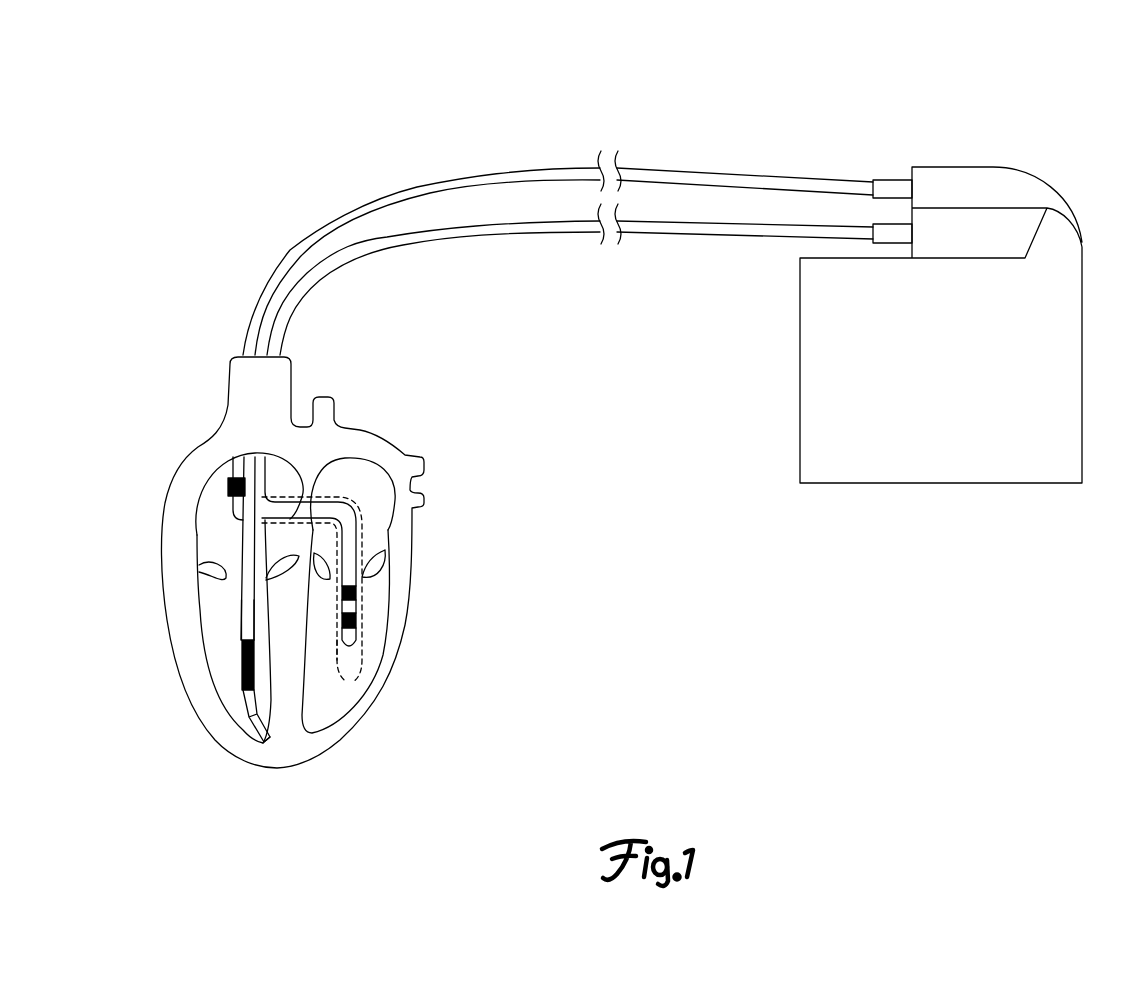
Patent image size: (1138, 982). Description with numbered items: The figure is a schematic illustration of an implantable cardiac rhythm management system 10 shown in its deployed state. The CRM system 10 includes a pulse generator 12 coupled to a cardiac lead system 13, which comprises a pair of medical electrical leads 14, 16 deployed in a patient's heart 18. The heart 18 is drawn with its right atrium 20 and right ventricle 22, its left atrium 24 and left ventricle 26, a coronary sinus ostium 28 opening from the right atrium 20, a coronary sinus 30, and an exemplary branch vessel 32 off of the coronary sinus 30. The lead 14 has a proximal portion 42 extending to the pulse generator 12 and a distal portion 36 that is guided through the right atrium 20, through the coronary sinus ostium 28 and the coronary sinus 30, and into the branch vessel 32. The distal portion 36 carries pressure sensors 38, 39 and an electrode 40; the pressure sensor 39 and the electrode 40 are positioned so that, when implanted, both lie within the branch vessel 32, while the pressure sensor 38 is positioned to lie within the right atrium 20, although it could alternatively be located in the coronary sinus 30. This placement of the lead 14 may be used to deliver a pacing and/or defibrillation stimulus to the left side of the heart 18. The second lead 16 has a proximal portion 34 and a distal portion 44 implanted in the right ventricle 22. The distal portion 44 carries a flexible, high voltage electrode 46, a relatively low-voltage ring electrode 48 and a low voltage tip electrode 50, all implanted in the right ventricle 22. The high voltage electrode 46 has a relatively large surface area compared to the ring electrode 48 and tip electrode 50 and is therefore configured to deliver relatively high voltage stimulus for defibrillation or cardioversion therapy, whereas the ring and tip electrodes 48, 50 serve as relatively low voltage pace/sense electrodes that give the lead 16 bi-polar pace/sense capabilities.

The cardiac rhythm management system 10 is at (857, 100).
The pulse generator 12 is at (1087, 348).
The cardiac lead system 13 is at (458, 152).
The medical electrical lead 14 is at (702, 167).
The medical electrical lead 16 is at (722, 240).
The heart 18 is at (416, 590).
The right atrium 20 is at (210, 535).
The right ventricle 22 is at (222, 653).
The left atrium 24 is at (355, 475).
The left ventricle 26 is at (337, 697).
The coronary sinus ostium 28 is at (262, 517).
The coronary sinus 30 is at (352, 506).
The branch vessel 32 is at (343, 606).
The proximal portion 34 is at (447, 243).
The distal portion 36 is at (226, 505).
The pressure sensor 38 is at (228, 485).
The pressure sensor 39 is at (357, 592).
The electrode 40 is at (358, 618).
The proximal portion 42 is at (768, 175).
The distal portion 44 is at (237, 621).
The high voltage electrode 46 is at (240, 670).
The ring electrode 48 is at (249, 715).
The tip electrode 50 is at (270, 740).